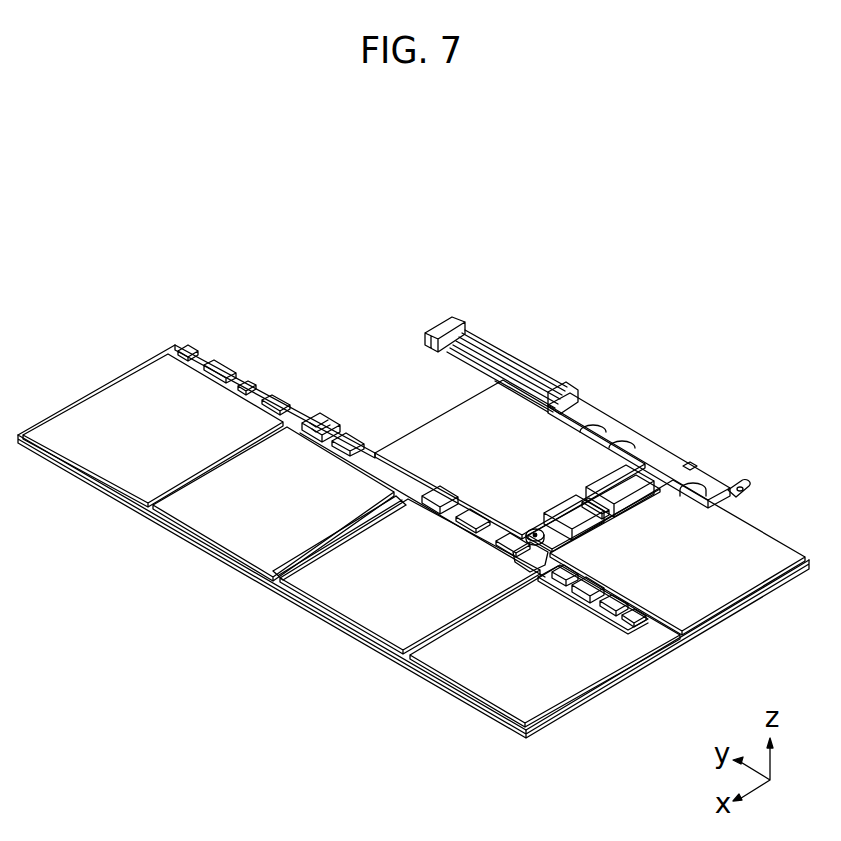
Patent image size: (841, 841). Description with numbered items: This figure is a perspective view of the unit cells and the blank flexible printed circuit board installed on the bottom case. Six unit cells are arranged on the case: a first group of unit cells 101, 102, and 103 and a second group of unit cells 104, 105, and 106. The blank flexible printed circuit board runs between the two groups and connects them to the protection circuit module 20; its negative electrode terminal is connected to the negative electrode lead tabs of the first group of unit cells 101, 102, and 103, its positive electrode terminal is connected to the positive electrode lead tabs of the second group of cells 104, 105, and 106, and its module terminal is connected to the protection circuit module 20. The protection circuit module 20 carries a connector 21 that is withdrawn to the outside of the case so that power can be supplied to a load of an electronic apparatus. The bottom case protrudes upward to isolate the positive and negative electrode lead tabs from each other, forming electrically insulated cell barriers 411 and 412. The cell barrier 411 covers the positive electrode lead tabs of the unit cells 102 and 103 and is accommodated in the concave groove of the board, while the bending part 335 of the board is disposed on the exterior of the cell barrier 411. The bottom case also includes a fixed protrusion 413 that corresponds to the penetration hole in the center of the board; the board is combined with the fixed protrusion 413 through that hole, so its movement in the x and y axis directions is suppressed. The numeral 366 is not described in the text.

The unit cell 101 is at (169, 445).
The unit cell 102 is at (298, 514).
The unit cell 103 is at (429, 588).
The unit cell 104 is at (562, 666).
The unit cell 105 is at (698, 569).
The unit cell 106 is at (528, 466).
The protection circuit module 20 is at (627, 427).
The connector 21 is at (437, 331).
The bending part 335 is at (347, 444).
The fastening member 366 is at (522, 553).
The cell barrier 411 is at (317, 430).
The cell barrier 412 is at (610, 523).
The fixed protrusion 413 is at (540, 527).